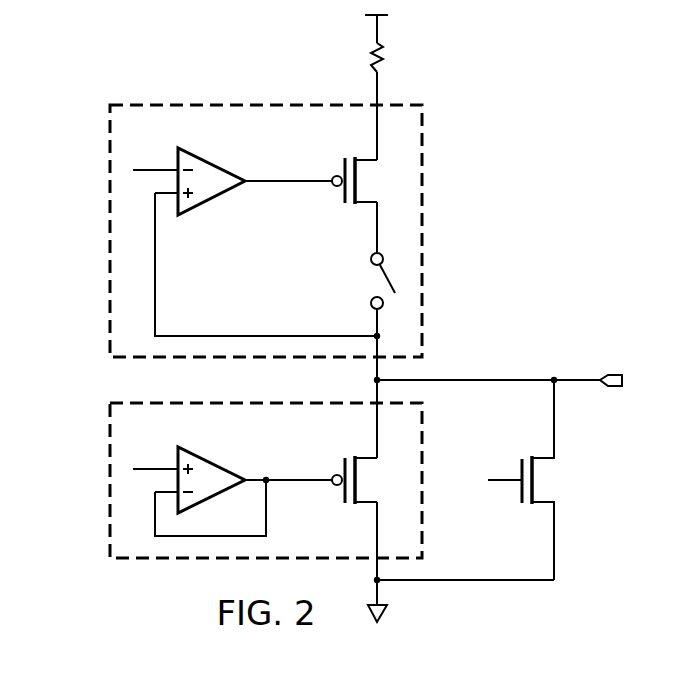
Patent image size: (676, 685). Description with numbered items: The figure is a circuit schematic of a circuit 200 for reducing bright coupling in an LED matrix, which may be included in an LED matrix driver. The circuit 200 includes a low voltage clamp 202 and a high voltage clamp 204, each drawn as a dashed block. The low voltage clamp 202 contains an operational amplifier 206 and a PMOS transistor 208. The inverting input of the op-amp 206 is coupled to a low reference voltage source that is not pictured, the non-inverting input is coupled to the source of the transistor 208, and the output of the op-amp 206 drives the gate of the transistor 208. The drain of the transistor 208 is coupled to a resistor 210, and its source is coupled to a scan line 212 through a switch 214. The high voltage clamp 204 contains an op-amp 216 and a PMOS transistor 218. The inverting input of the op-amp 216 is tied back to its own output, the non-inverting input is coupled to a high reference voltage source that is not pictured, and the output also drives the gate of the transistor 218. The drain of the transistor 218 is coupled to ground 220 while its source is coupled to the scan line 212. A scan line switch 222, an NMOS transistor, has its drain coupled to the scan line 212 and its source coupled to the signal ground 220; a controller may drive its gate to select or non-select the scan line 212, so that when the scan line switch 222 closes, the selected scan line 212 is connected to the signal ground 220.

The circuit 200 is at (198, 59).
The low voltage clamp 202 is at (102, 211).
The high voltage clamp 204 is at (102, 499).
The operational amplifier 206 is at (211, 163).
The transistor 208 is at (342, 172).
The resistor 210 is at (384, 63).
The scan line 212 is at (577, 378).
The switch 214 is at (385, 281).
The op-amp 216 is at (211, 463).
The transistor 218 is at (342, 472).
The ground 220 is at (385, 616).
The scan line switch 222 is at (518, 487).